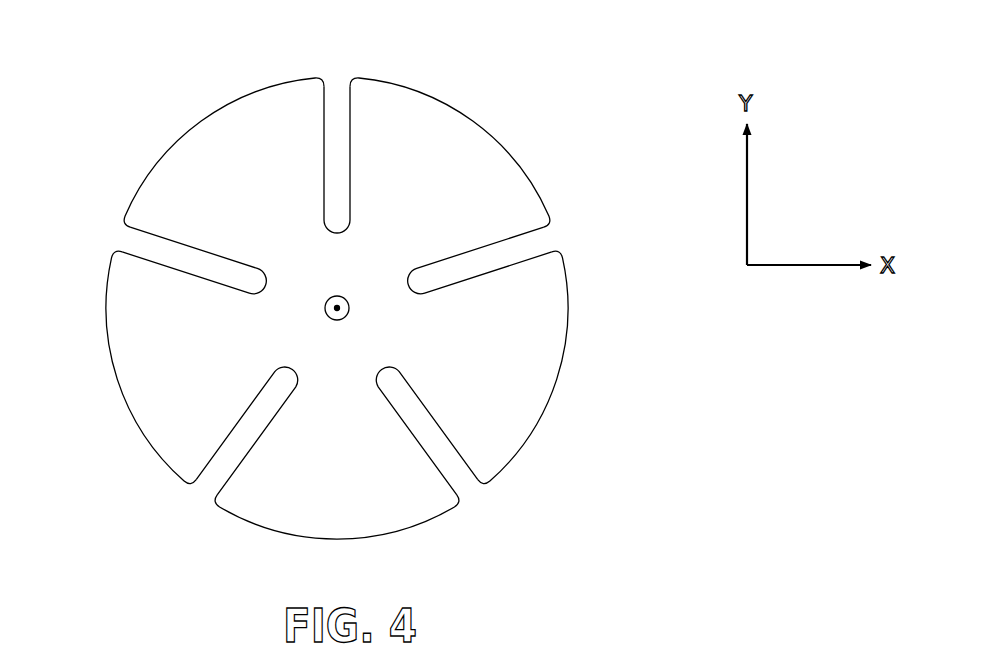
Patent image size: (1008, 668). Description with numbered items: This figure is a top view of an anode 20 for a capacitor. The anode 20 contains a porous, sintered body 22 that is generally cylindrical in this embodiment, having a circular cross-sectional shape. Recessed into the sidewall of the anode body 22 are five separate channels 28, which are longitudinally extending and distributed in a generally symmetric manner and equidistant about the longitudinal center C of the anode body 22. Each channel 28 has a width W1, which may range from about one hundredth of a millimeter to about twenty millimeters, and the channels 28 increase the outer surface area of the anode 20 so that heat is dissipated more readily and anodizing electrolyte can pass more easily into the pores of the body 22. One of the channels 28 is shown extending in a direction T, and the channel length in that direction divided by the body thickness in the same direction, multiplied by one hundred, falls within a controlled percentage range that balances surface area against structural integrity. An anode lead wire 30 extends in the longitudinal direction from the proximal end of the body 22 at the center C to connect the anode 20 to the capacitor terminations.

The anode 20 is at (358, 294).
The porous, sintered body 22 is at (476, 165).
The channels 28 is at (338, 129).
The anode lead wire 30 is at (341, 297).
The longitudinal center C is at (340, 316).
The width of the channels W1 is at (198, 245).
The direction T is at (243, 496).